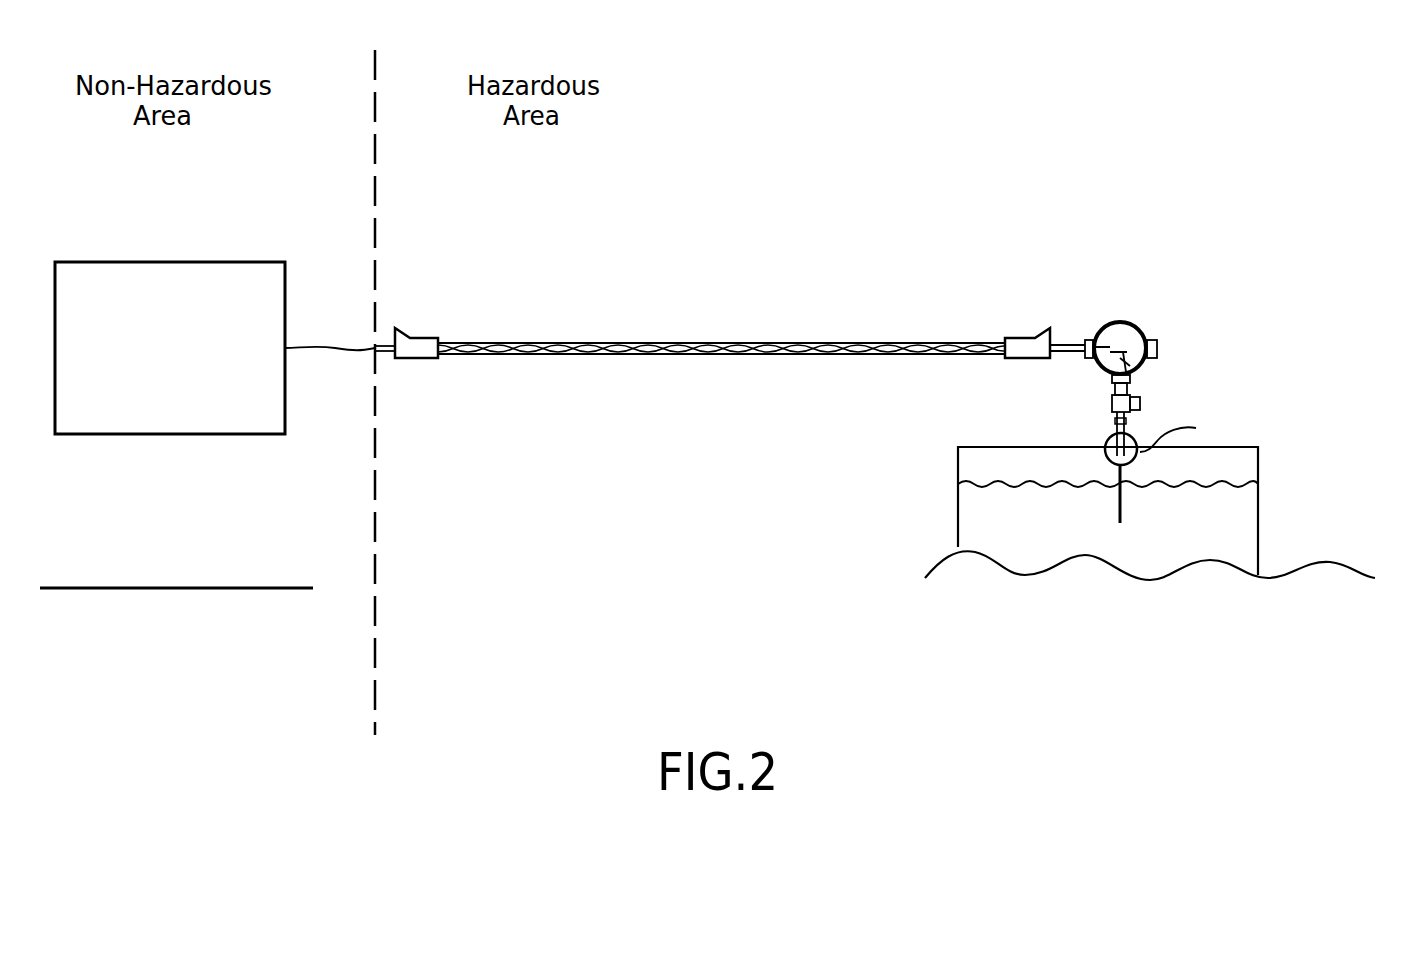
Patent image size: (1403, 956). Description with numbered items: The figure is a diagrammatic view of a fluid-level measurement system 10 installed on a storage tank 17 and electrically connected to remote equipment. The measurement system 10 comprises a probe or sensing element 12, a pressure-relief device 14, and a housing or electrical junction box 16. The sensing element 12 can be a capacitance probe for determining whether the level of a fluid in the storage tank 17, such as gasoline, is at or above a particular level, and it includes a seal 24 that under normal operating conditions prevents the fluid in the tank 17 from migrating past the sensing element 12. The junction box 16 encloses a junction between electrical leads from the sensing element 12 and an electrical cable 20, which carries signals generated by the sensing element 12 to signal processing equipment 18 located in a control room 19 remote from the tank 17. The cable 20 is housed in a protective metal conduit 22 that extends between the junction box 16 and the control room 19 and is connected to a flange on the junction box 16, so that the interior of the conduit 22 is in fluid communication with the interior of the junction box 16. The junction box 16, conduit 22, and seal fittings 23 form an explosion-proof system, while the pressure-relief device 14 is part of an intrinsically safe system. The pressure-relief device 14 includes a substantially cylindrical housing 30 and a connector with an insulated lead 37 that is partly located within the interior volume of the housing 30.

The measurement system 10 is at (1138, 305).
The sensing element 12 is at (1122, 495).
The pressure-relief device 14 is at (1155, 402).
The junction box 16 is at (1143, 330).
The storage tank 17 is at (1258, 472).
The signal processing equipment 18 is at (170, 348).
The control room 19 is at (176, 571).
The electrical cable 20 is at (336, 349).
The metal conduit 22 is at (542, 343).
The seal fittings 23 is at (406, 337).
The seal 24 is at (1106, 450).
The housing 30 is at (1116, 402).
The insulated lead 37 is at (1130, 362).